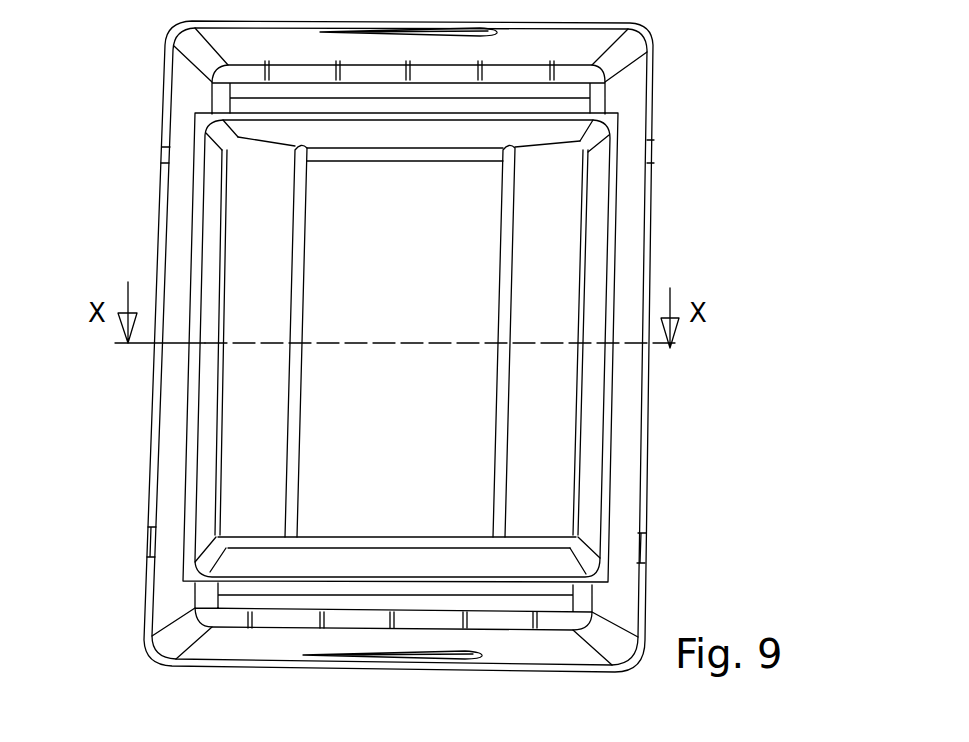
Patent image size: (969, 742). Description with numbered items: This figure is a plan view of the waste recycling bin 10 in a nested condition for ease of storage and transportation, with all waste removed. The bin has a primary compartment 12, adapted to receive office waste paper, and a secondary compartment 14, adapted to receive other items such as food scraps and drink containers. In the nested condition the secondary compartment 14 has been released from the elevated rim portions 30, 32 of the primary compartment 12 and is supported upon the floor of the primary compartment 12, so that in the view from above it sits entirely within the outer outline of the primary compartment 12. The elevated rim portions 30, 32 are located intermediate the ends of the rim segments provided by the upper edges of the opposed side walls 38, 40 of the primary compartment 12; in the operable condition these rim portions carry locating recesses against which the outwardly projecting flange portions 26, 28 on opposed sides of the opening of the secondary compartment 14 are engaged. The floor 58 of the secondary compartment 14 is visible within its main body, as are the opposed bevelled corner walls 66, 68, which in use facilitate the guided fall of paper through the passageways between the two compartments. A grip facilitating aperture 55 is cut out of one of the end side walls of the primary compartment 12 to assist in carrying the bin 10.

The waste recycling bin 10 is at (734, 584).
The primary compartment 12 is at (658, 120).
The secondary compartment 14 is at (618, 190).
The flange portion 26 is at (540, 106).
The flange portion 28 is at (508, 588).
The elevated rim portion 30 is at (647, 543).
The elevated rim portion 32 is at (143, 537).
The side wall 38 is at (625, 457).
The side wall 40 is at (170, 453).
The grip facilitating aperture 55 is at (385, 655).
The floor 58 is at (452, 418).
The bevelled corner wall 66 is at (252, 278).
The bevelled corner wall 68 is at (555, 262).